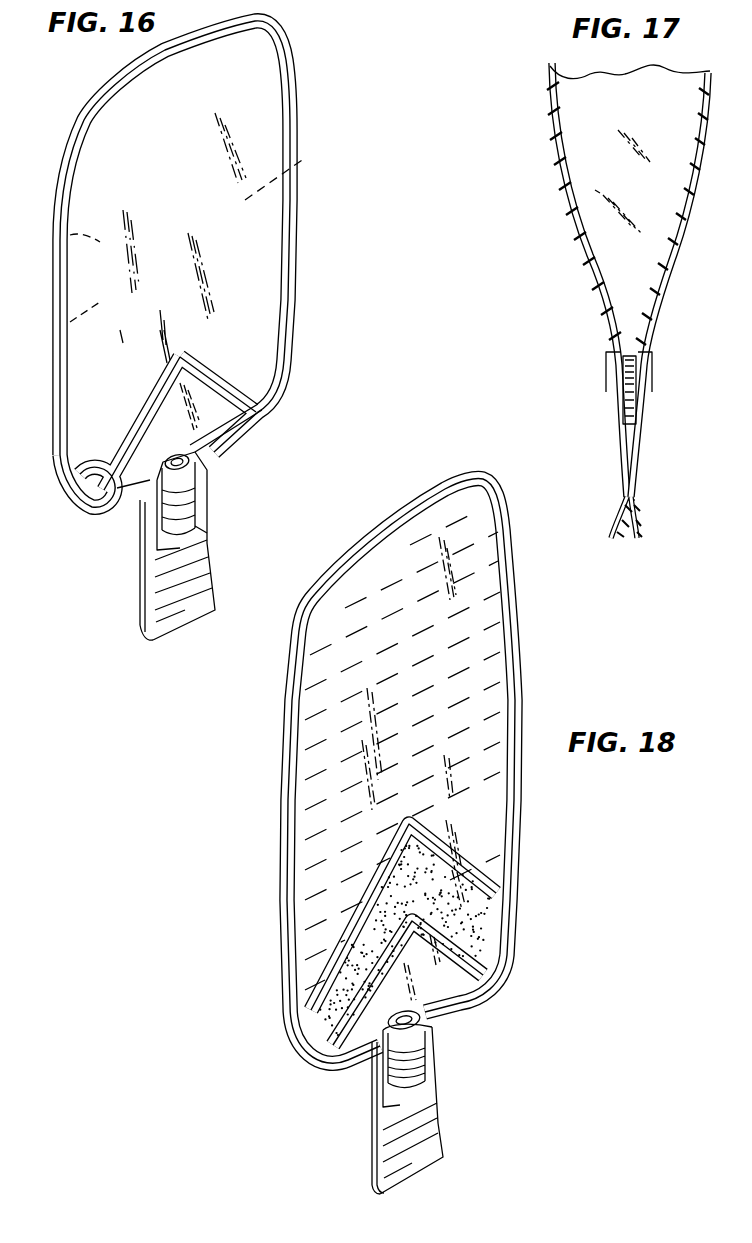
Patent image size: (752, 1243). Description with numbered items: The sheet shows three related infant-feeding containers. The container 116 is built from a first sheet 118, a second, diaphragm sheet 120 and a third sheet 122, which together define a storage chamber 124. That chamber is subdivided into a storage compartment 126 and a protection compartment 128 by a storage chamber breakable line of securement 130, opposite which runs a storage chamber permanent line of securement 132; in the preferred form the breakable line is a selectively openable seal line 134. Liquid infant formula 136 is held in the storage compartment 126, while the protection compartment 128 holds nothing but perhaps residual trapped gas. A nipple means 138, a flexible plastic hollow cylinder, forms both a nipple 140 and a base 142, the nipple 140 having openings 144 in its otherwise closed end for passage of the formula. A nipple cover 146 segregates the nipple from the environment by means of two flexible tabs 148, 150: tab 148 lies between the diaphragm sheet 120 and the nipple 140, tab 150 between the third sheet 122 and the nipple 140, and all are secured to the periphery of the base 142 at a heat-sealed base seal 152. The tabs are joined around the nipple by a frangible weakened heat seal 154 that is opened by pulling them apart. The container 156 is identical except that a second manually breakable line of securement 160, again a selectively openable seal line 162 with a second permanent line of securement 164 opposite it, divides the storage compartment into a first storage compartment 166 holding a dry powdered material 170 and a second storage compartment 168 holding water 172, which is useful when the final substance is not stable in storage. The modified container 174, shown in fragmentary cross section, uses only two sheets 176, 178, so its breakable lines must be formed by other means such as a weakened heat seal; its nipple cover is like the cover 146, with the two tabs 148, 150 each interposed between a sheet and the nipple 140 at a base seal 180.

In FIG. 16, the container 116 is at (52, 150).
In FIG. 16, the first sheet 118 is at (85, 418).
In FIG. 16, the second, diaphragm sheet 120 is at (54, 326).
In FIG. 16, the third sheet 122 is at (54, 244).
In FIG. 16, the storage chamber 124 is at (235, 356).
In FIG. 18, the storage chamber 124 is at (480, 672).
In FIG. 16, the storage compartment 126 is at (253, 247).
In FIG. 16, the protection compartment 128 is at (224, 441).
In FIG. 18, the protection compartment 128 is at (450, 980).
In FIG. 16, the storage chamber breakable line of securement 130 is at (117, 512).
In FIG. 18, the storage chamber breakable line of securement 130 is at (480, 990).
In FIG. 16, the storage chamber permanent line of securement 132 is at (74, 473).
In FIG. 18, the storage chamber permanent line of securement 132 is at (465, 948).
In FIG. 16, the selectively openable seal line 134 is at (125, 520).
In FIG. 16, the liquid infant formula 136 is at (306, 158).
In FIG. 16, the nipple means 138 is at (201, 504).
In FIG. 16, the nipple 140 is at (198, 530).
In FIG. 17, the nipple 140 is at (628, 386).
In FIG. 18, the nipple 140 is at (416, 1074).
In FIG. 16, the base 142 is at (209, 470).
In FIG. 16, the openings 144 is at (188, 527).
In FIG. 16, the nipple cover 146 is at (145, 645).
In FIG. 17, the nipple cover 146 is at (636, 480).
In FIG. 18, the nipple cover 146 is at (377, 1123).
In FIG. 16, the flexible tab 148 is at (180, 622).
In FIG. 17, the flexible tab 148 is at (614, 514).
In FIG. 18, the flexible tab 148 is at (417, 1163).
In FIG. 16, the flexible tab 150 is at (138, 632).
In FIG. 17, the flexible tab 150 is at (636, 520).
In FIG. 18, the flexible tab 150 is at (372, 1192).
In FIG. 16, the base seal 152 is at (180, 455).
In FIG. 16, the weakened heat seal 154 is at (160, 553).
In FIG. 18, the container 156 is at (276, 784).
In FIG. 18, the second manually breakable line of securement 160 is at (338, 963).
In FIG. 18, the selectively openable seal line 162 is at (334, 979).
In FIG. 18, the second permanent line of securement 164 is at (343, 937).
In FIG. 18, the first storage compartment 166 is at (466, 892).
In FIG. 18, the second storage compartment 168 is at (490, 790).
In FIG. 18, the dry powdered material 170 is at (475, 910).
In FIG. 18, the water 172 is at (472, 633).
In FIG. 17, the modified container 174 is at (553, 206).
In FIG. 17, the sheet 176 is at (580, 244).
In FIG. 17, the sheet 178 is at (682, 240).
In FIG. 17, the base seal 180 is at (606, 366).